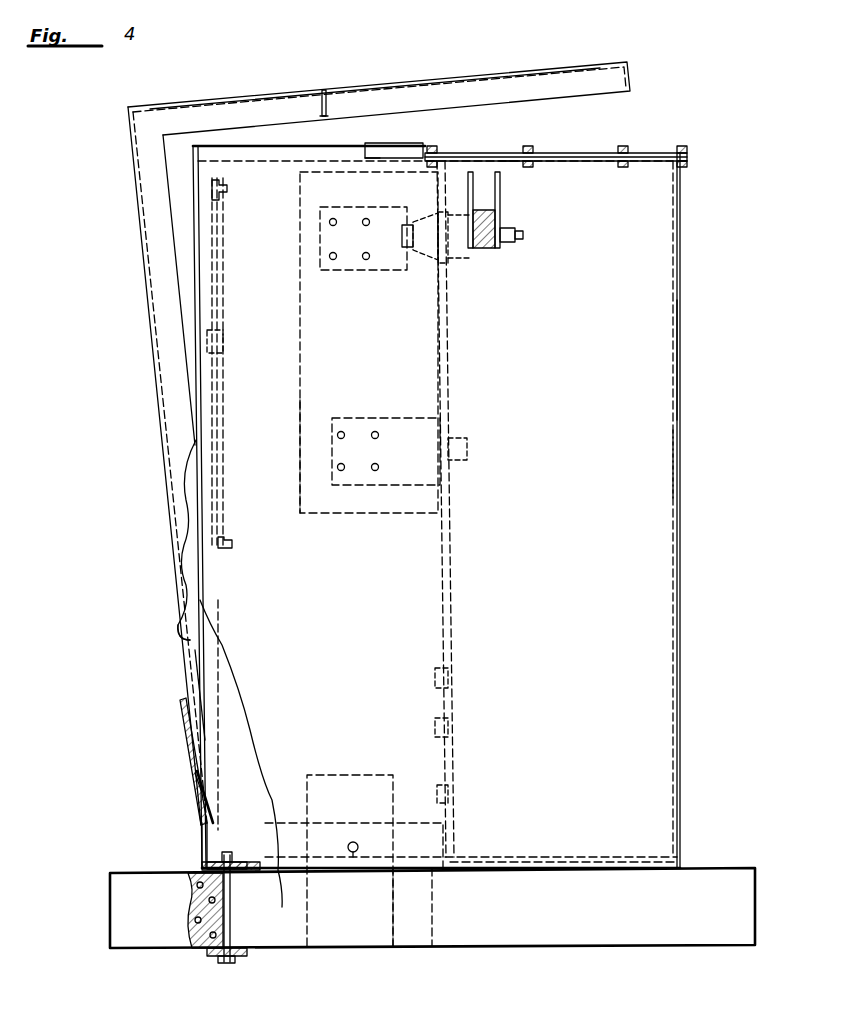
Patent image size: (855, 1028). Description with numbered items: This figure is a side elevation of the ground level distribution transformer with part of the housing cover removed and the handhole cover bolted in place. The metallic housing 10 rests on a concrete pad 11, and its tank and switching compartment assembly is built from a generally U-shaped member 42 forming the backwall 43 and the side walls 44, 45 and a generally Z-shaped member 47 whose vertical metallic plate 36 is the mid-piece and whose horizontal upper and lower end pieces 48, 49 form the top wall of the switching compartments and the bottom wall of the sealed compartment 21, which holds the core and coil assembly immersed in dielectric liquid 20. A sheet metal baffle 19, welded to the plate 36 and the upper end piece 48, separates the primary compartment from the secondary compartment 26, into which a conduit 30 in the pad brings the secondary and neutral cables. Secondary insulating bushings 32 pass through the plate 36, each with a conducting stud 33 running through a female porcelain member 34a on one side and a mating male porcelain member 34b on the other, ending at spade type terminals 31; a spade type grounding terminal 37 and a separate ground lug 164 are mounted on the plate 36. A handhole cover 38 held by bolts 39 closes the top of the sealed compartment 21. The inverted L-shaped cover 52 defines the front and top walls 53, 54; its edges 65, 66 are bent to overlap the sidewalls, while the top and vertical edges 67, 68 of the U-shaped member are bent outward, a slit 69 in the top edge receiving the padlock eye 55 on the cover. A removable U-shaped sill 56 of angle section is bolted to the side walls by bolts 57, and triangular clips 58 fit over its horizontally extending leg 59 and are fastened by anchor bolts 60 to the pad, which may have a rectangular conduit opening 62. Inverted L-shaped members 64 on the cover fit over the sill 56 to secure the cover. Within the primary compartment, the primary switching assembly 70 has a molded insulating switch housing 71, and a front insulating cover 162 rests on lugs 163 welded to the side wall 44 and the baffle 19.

The metallic housing 10 is at (92, 516).
The concrete pad 11 is at (120, 890).
The baffle 19 is at (200, 172).
The dielectric liquid 20 is at (640, 340).
The sealed compartment 21 is at (580, 543).
The secondary compartment 26 is at (367, 623).
The conduit 30 is at (358, 790).
The spade type terminals 31 is at (348, 265).
The secondary insulating bushings 32 is at (425, 215).
The conducting studs 33 is at (525, 233).
The female porcelain member 34a is at (425, 252).
The male porcelain member 34b is at (478, 250).
The vertical metallic plate 36 is at (446, 370).
The spade type grounding terminal 37 is at (406, 470).
The handhole cover 38 is at (557, 153).
The bolts 39 is at (434, 146).
The U-shaped member 42 is at (684, 398).
The backwall 43 is at (680, 478).
The side wall 44 is at (213, 718).
The side wall 45 is at (613, 603).
The Z-shaped member 47 is at (440, 560).
The upper end piece 48 is at (275, 165).
The lower end piece 49 is at (488, 857).
The inverted L-shaped cover 52 is at (122, 131).
The front wall 53 is at (150, 214).
The top wall 54 is at (277, 93).
The padlock eye 55 is at (329, 93).
The U-shaped sill 56 is at (242, 838).
The bolts 57 is at (353, 853).
The triangular clips 58 is at (248, 830).
The horizontally extending leg 59 is at (295, 870).
The anchor bolts 60 is at (222, 963).
The conduit opening 62 is at (231, 915).
The inverted L-shaped members 64 is at (212, 808).
The edge 65 is at (190, 630).
The edge 66 is at (206, 114).
The top edge 67 is at (372, 160).
The vertical edge 68 is at (195, 242).
The slit 69 is at (384, 152).
The primary switching assembly 70 is at (322, 520).
The switch housing 71 is at (302, 445).
The front insulating cover 162 is at (222, 291).
The lugs 163 is at (226, 195).
The ground lug 164 is at (436, 676).